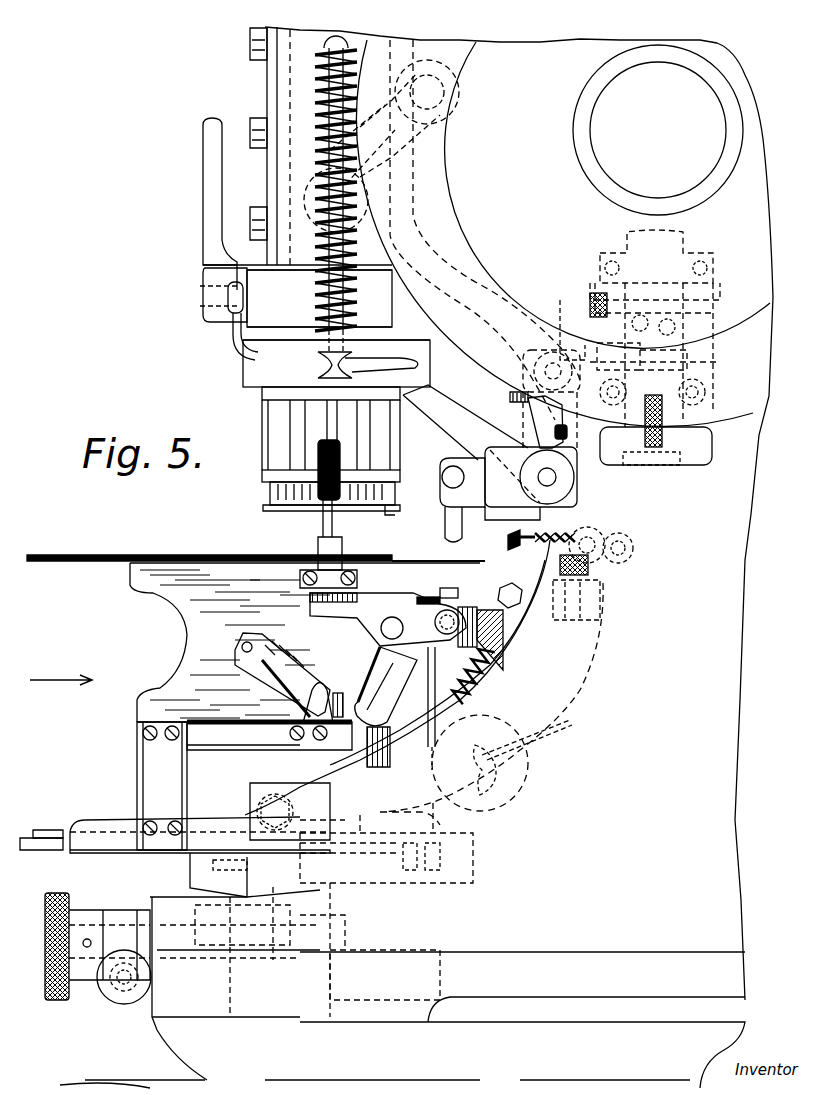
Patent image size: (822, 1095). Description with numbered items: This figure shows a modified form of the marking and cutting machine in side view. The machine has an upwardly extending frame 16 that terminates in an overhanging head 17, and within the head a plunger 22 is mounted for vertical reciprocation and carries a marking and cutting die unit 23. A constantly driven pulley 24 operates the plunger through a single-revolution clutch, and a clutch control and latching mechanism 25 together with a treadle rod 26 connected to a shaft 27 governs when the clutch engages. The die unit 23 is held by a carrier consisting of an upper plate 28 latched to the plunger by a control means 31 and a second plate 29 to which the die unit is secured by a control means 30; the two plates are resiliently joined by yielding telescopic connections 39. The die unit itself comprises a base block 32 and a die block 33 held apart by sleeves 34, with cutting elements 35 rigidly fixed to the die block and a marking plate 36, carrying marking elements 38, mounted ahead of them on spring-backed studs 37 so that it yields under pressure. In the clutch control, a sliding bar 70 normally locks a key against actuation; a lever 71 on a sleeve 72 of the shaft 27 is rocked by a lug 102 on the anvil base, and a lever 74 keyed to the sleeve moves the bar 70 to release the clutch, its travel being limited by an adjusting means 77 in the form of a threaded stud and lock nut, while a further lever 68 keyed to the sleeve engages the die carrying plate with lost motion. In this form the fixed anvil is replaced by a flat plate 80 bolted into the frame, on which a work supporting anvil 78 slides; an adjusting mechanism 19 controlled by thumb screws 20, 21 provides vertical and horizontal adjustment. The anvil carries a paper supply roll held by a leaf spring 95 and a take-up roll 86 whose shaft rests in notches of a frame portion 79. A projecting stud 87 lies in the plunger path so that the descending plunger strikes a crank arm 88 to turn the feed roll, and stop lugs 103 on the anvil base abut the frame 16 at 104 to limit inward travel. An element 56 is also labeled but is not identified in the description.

The frame or casing portion 16 is at (690, 780).
The head portion 17 is at (300, 30).
The adjusting mechanism 19 is at (263, 943).
The thumb screw 20 is at (62, 998).
The thumb screw 21 is at (118, 1005).
The plunger 22 is at (319, 298).
The marking and cutting die unit 23 is at (262, 448).
The pulley 24 is at (547, 48).
The clutch control and latching mechanism 25 is at (685, 255).
The treadle rod 26 is at (443, 522).
The shaft 27 is at (547, 490).
The upper plate 28 is at (278, 335).
The second plate 29 is at (250, 340).
The control means 30 is at (228, 328).
The control means 31 is at (205, 228).
The base block 32 is at (265, 398).
The die block 33 is at (300, 480).
The sleeves 34 is at (395, 440).
The cutting elements 35 is at (310, 505).
The marking plate 36 is at (428, 483).
The studs 37 is at (388, 508).
The marking elements 38 is at (345, 508).
The yielding telescopic connections 39 is at (318, 200).
The housing 56 is at (318, 368).
The lever 68 is at (447, 400).
The sliding bar 70 is at (700, 366).
The lever 71 is at (520, 605).
The sleeve 72 is at (575, 474).
The lever 74 is at (540, 421).
The adjusting means 77 is at (527, 370).
The work supporting anvil 78 is at (200, 647).
The frame portion 79 is at (580, 660).
The flat plate 80 is at (52, 847).
The take-up roll 86 is at (515, 787).
The projecting stud 87 is at (300, 470).
The crank arm 88 is at (365, 618).
The leaf spring 95 is at (275, 670).
The lug 102 is at (250, 748).
The stop lugs 103 is at (150, 790).
The frame abutment portion 104 is at (258, 798).